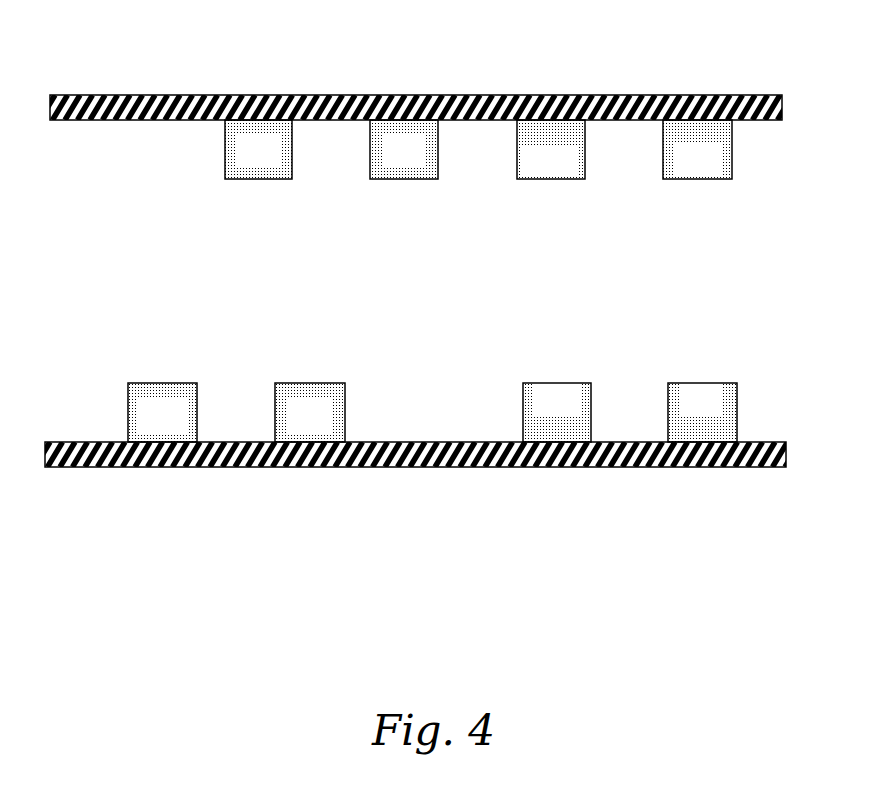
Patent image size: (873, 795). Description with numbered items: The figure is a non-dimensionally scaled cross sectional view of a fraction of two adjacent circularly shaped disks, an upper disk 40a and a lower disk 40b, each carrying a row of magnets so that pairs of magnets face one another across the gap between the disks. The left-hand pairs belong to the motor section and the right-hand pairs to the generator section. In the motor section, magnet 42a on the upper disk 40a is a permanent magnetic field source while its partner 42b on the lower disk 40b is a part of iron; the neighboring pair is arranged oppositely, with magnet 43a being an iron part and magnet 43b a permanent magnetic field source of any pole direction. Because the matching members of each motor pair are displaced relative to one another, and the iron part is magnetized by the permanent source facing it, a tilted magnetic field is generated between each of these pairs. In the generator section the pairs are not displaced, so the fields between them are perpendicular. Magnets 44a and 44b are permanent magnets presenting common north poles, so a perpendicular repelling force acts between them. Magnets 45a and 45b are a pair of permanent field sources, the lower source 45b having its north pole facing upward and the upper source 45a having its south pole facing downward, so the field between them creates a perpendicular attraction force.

The disk 40a is at (62, 88).
The permanent magnetic field source 42a is at (247, 121).
The iron part 43a is at (390, 124).
The permanent magnet 44a is at (537, 123).
The permanent field source 45a is at (682, 123).
The disk 40b is at (60, 442).
The iron part 42b is at (150, 442).
The permanent magnetic field source 43b is at (295, 442).
The permanent magnet 44b is at (535, 442).
The permanent magnetic source 45b is at (683, 442).